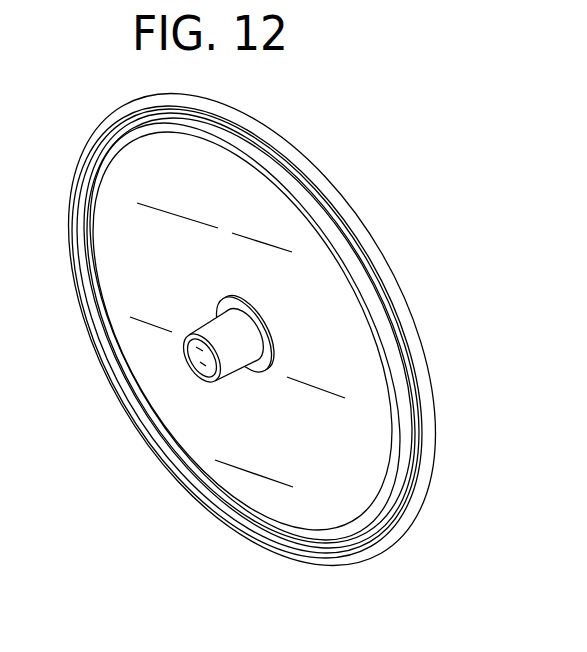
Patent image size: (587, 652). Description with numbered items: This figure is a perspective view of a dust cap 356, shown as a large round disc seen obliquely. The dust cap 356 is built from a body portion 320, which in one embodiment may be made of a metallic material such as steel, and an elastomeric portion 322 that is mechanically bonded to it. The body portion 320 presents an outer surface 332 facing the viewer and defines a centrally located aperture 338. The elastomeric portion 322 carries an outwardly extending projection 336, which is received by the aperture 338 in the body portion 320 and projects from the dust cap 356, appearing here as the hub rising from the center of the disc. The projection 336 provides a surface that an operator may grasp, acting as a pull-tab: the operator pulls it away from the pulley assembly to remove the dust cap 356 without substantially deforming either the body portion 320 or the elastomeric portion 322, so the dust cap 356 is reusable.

The body portion 320 is at (320, 437).
The elastomeric portion 322 is at (375, 256).
The outer surface 332 is at (242, 330).
The outwardly extending projection 336 is at (237, 328).
The aperture 338 is at (270, 340).
The dust cap 356 is at (457, 207).